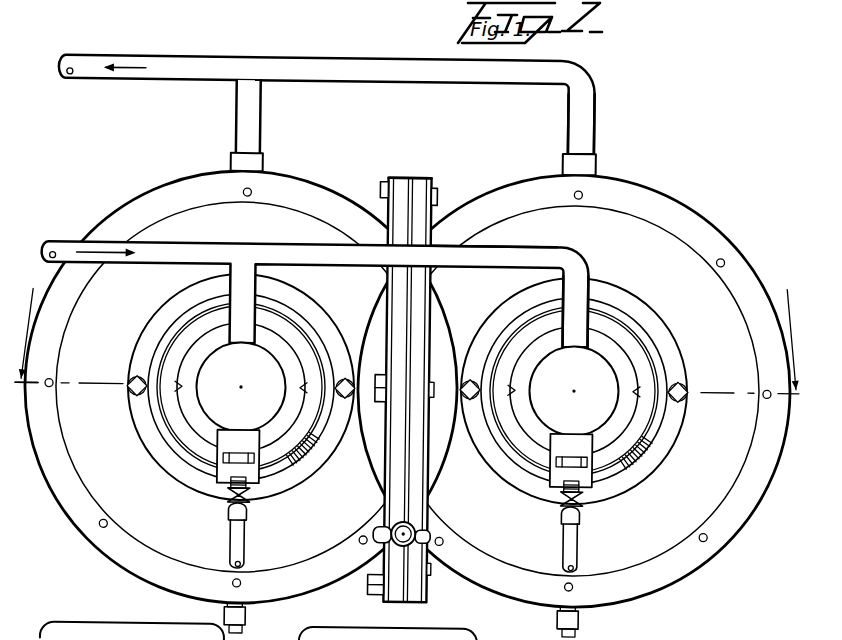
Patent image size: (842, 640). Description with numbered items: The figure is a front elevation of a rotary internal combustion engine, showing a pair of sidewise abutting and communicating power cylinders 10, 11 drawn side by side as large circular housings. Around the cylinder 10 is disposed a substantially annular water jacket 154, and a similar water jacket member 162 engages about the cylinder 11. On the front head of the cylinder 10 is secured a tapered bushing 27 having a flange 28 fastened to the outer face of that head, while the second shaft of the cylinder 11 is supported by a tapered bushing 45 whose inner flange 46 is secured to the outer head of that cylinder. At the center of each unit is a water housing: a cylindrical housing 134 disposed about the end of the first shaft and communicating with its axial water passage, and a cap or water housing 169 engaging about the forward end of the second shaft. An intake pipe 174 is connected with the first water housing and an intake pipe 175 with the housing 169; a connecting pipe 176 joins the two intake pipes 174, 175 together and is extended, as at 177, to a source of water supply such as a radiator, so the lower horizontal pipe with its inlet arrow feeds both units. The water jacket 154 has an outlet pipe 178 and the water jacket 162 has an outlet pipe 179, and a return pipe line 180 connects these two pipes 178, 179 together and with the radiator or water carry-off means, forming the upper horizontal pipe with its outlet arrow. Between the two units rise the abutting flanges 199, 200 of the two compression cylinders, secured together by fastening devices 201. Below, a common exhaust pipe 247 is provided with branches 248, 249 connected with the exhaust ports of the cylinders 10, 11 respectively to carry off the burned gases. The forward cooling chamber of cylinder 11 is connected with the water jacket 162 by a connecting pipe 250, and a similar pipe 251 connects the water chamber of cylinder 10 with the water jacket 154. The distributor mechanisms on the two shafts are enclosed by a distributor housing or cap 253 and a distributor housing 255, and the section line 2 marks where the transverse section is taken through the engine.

The section line 2- 2 is at (407, 323).
The power cylinder 10 is at (235, 379).
The power cylinder 11 is at (578, 390).
The tapered bushing 27 is at (302, 448).
The flange 28 is at (241, 387).
The tapered bushing 45 is at (574, 391).
The inner flange 46 is at (574, 391).
The cylindrical housing 134 is at (267, 372).
The water jacket 154 is at (240, 386).
The water jacket member 162 is at (573, 390).
The cap or water housing 169 is at (600, 369).
The intake pipe 174 is at (241, 387).
The intake pipe 175 is at (581, 289).
The connecting pipe 176 is at (476, 254).
The extension of connecting pipe 177 is at (186, 248).
The outlet pipe 178 is at (240, 126).
The outlet pipe 179 is at (567, 127).
The return pipe line 180 is at (363, 66).
The abutting flange 199 is at (404, 175).
The abutting flange 200 is at (424, 176).
The fastening devices 201 is at (379, 188).
The common exhaust pipe 247 is at (408, 523).
The branch 248 is at (376, 533).
The branch 249 is at (433, 532).
The connecting pipe 250 is at (581, 544).
The pipe 251 is at (240, 548).
The distributor housing or cap 253 is at (241, 387).
The distributor housing 255 is at (574, 391).